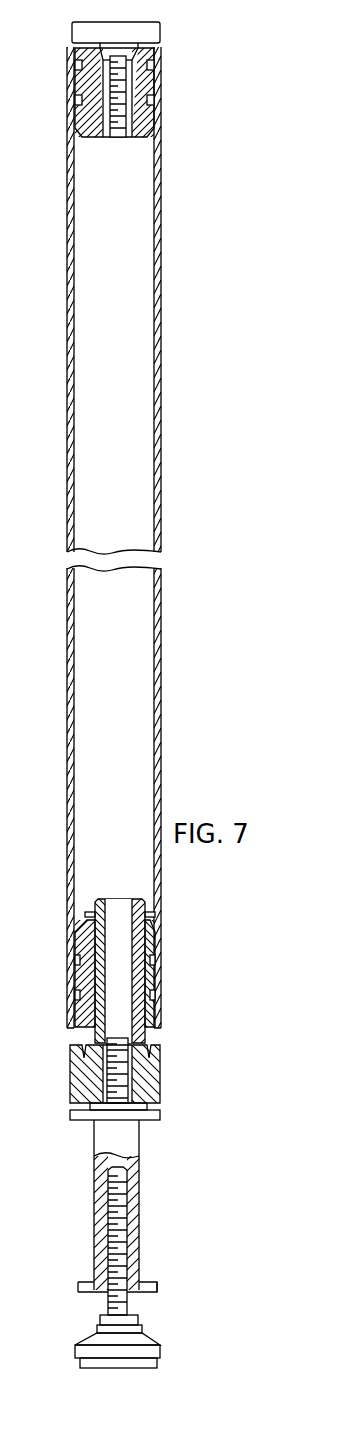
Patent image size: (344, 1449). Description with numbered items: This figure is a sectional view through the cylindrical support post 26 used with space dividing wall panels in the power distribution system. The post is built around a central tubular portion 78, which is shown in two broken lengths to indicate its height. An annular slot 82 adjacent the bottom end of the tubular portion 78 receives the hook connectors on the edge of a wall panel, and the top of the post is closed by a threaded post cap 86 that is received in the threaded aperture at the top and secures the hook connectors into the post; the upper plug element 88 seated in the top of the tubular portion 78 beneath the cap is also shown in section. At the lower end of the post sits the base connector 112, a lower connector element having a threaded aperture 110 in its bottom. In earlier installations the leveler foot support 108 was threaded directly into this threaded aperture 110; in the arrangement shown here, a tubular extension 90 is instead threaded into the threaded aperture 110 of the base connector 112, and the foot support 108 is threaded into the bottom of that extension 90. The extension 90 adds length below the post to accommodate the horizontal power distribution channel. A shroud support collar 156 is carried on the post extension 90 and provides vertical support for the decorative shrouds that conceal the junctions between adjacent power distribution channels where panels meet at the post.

The cylindrical support post 26 is at (140, 689).
The central tubular portion 78 is at (161, 660).
The annular slot 82 is at (125, 1057).
The threaded post cap 86 is at (147, 36).
The upper plug 88 is at (97, 86).
The tubular extension 90 is at (130, 1165).
The foot support 108 is at (140, 1345).
The threaded aperture 110 is at (148, 1053).
The base connector 112 is at (143, 1080).
The shroud support collar 156 is at (148, 1284).